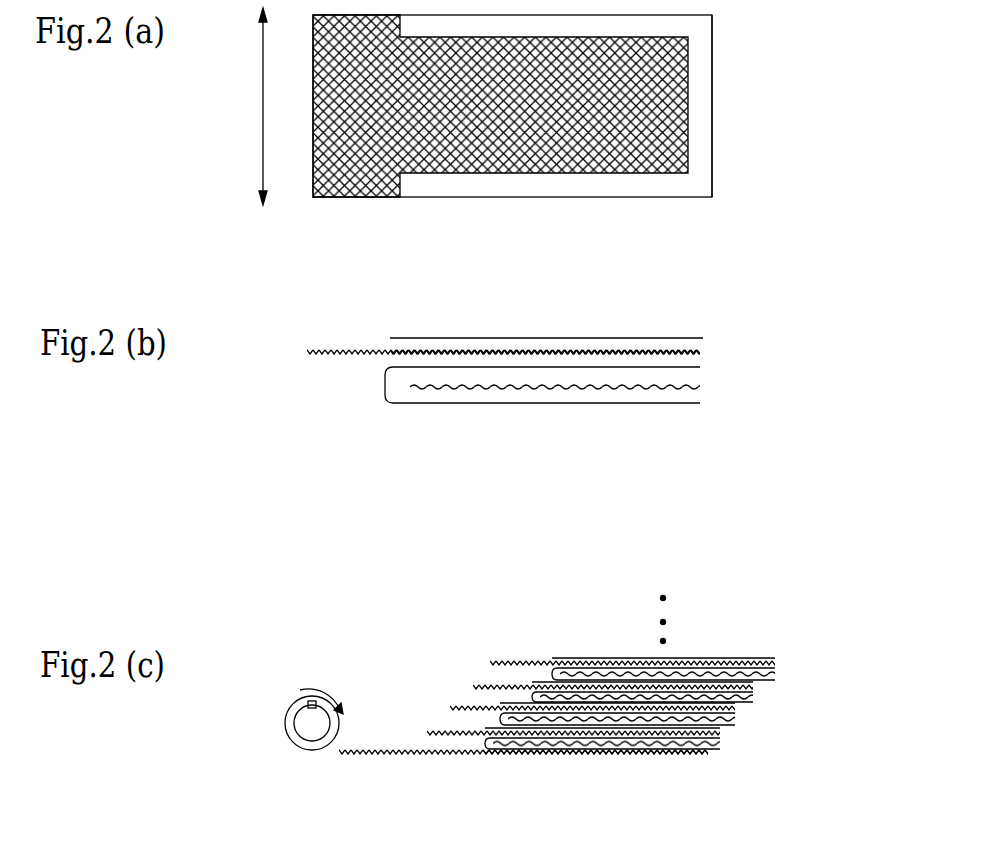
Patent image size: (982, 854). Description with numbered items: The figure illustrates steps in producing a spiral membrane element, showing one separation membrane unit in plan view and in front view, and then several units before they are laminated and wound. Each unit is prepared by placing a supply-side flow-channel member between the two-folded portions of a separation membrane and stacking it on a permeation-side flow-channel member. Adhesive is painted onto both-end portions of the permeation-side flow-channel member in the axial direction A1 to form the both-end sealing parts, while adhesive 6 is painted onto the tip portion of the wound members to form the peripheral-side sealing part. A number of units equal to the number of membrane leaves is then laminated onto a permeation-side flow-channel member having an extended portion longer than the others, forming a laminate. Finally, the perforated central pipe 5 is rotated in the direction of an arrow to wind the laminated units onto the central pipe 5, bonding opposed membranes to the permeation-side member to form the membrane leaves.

The central pipe 5 is at (297, 746).
The adhesive 6 is at (702, 145).
The axial direction A1 is at (262, 80).